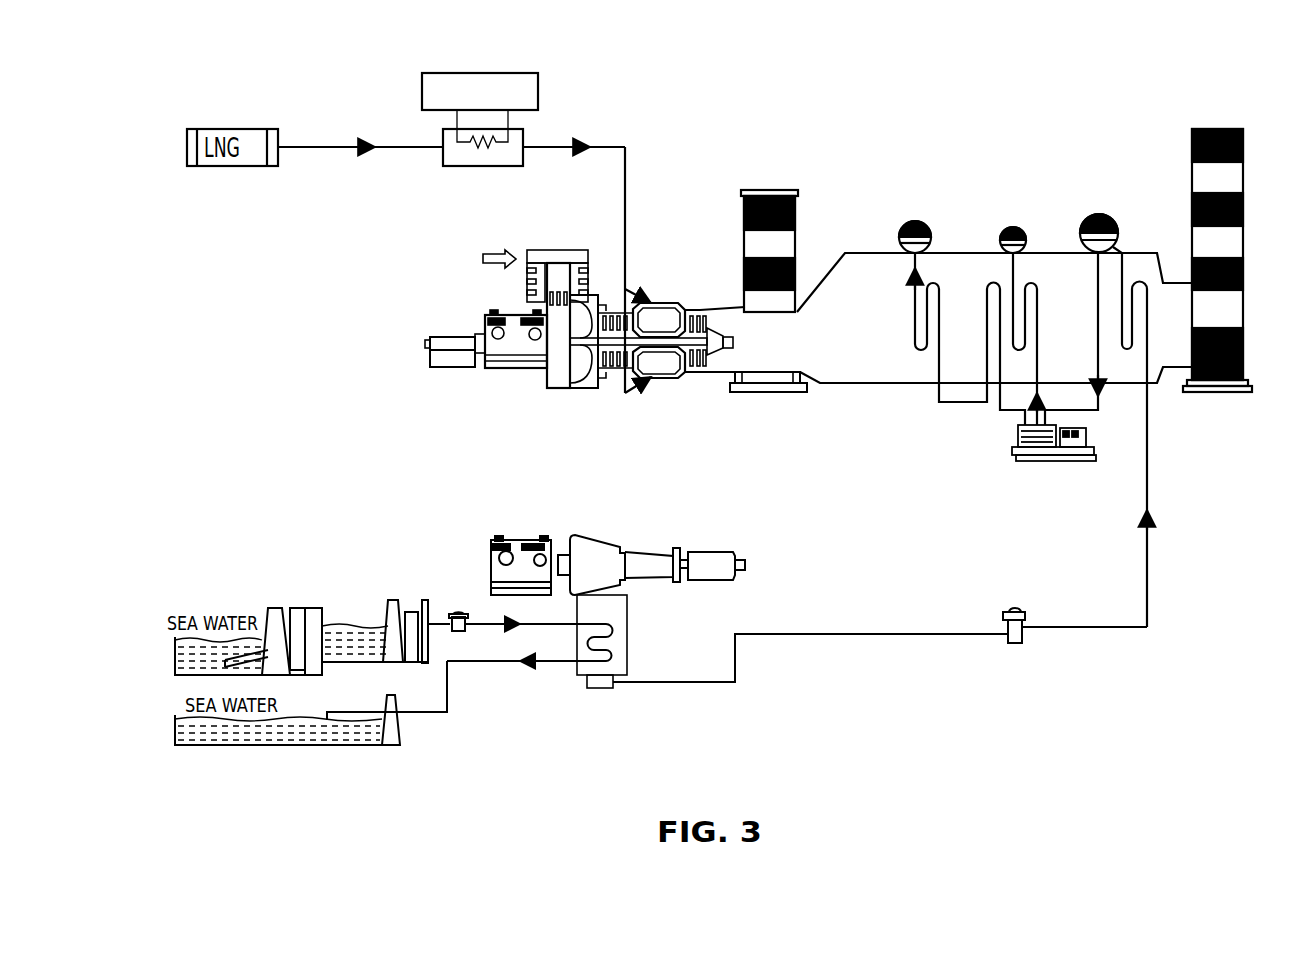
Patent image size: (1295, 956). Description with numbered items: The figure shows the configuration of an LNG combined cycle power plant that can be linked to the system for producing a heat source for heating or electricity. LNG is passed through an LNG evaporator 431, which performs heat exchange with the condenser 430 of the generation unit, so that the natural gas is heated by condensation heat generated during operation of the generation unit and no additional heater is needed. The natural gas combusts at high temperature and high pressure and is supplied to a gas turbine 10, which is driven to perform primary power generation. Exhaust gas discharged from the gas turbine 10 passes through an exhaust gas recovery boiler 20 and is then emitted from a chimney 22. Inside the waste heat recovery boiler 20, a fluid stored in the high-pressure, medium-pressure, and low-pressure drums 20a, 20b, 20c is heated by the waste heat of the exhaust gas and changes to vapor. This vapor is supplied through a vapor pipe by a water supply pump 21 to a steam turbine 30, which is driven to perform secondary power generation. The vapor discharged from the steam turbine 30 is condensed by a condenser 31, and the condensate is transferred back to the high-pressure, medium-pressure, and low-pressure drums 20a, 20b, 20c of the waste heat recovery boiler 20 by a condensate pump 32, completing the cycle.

The gas turbine 10 is at (660, 305).
The exhaust gas recovery boiler 20 is at (875, 252).
The high-pressure drum 20a is at (932, 207).
The medium-pressure drum 20b is at (1015, 227).
The low-pressure drum 20c is at (1111, 205).
The water supply pump 21 is at (1057, 466).
The chimney 22 is at (1232, 128).
The steam turbine 30 is at (598, 537).
The condenser 31 is at (628, 620).
The condensate pump 32 is at (1013, 607).
The condenser 430 is at (540, 93).
The LNG evaporator 431 is at (485, 168).